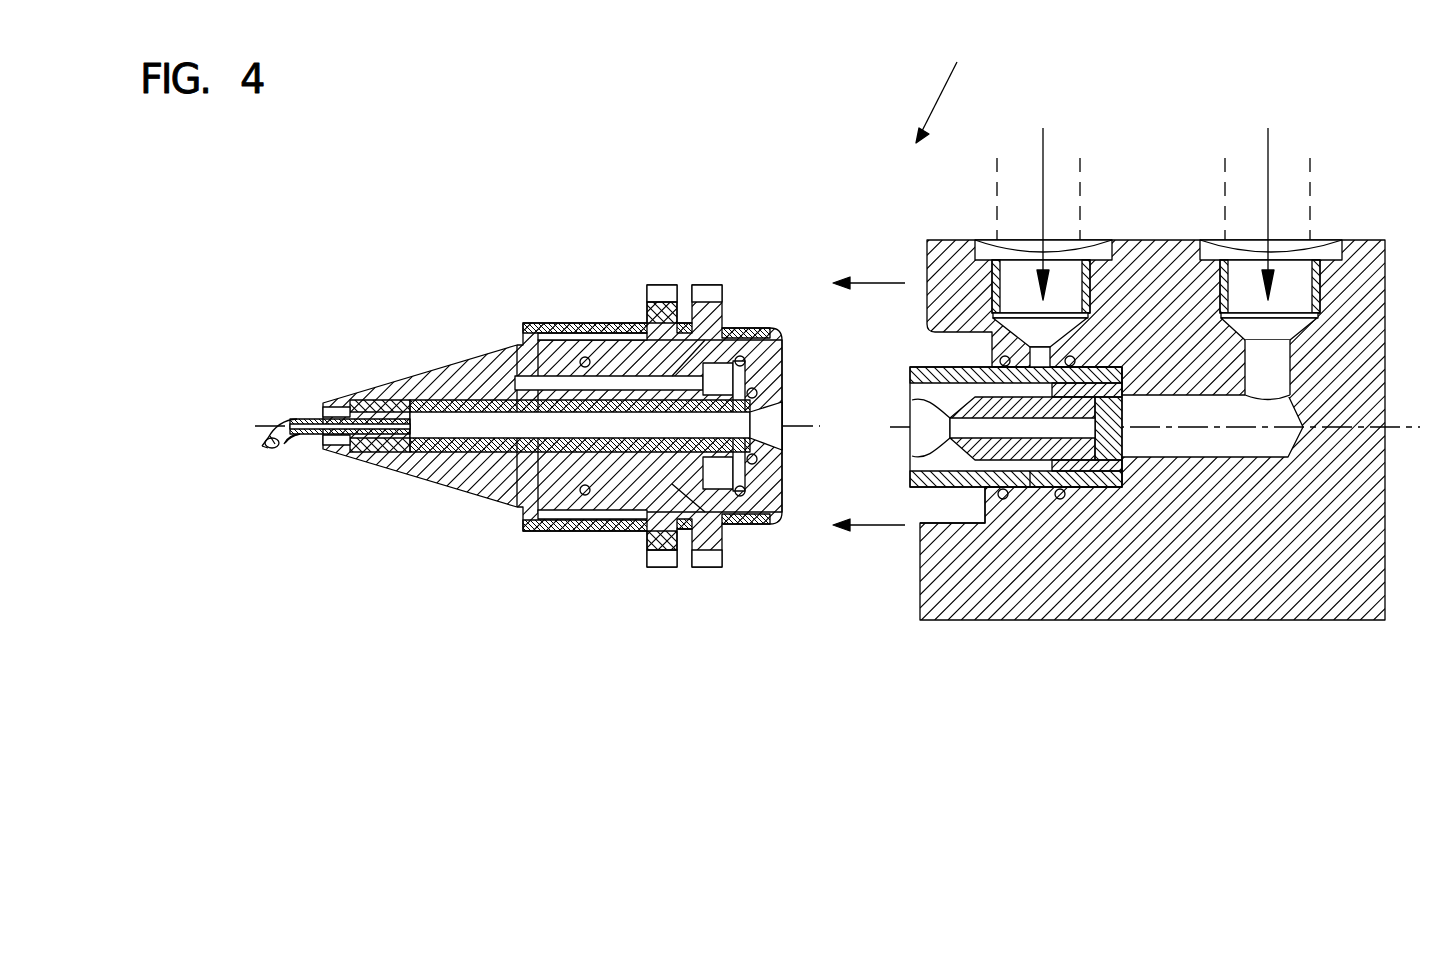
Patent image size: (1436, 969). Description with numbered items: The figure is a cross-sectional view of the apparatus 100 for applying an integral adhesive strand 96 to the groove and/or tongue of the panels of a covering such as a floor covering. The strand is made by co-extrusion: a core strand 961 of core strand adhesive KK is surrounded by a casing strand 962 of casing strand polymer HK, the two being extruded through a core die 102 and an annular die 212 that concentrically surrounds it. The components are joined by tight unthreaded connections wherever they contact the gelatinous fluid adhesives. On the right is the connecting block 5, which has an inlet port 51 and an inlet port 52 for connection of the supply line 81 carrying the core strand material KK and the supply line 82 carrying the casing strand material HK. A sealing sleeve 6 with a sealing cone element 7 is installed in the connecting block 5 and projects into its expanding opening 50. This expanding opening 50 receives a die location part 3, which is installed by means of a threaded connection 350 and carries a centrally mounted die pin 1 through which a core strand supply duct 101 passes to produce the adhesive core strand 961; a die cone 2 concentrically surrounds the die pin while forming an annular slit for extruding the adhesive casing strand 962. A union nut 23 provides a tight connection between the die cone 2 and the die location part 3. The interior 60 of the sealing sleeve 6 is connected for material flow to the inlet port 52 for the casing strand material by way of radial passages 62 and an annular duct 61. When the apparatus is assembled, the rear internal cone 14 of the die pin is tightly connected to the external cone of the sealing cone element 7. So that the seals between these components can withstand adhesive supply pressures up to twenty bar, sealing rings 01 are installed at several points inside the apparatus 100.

The apparatus 100 is at (954, 84).
The die pin 1 is at (408, 418).
The die cone 2 is at (462, 390).
The die location part 3 is at (683, 352).
The connecting block 5 is at (1328, 553).
The sealing sleeve 6 is at (1088, 468).
The sealing cone element 7 is at (1002, 440).
The rear internal cone 14 is at (765, 438).
The union nut 23 is at (548, 326).
The expanding opening 50 is at (950, 497).
The inlet port 51 is at (1283, 297).
The inlet port 52 is at (1052, 290).
The interior of the sealing sleeve 60 is at (912, 456).
The annular duct 61 is at (1070, 358).
The radial passages 62 is at (1030, 470).
The supply line 81 is at (1298, 210).
The supply line 82 is at (1058, 178).
The integral adhesive strand 96 is at (283, 440).
The core strand 961 is at (256, 450).
The casing strand 962 is at (266, 437).
The core strand supply duct 101 is at (478, 420).
The core die 102 is at (305, 443).
The annular die 212 is at (312, 417).
The threaded connection 350 is at (752, 328).
The sealing rings 01 is at (578, 495).